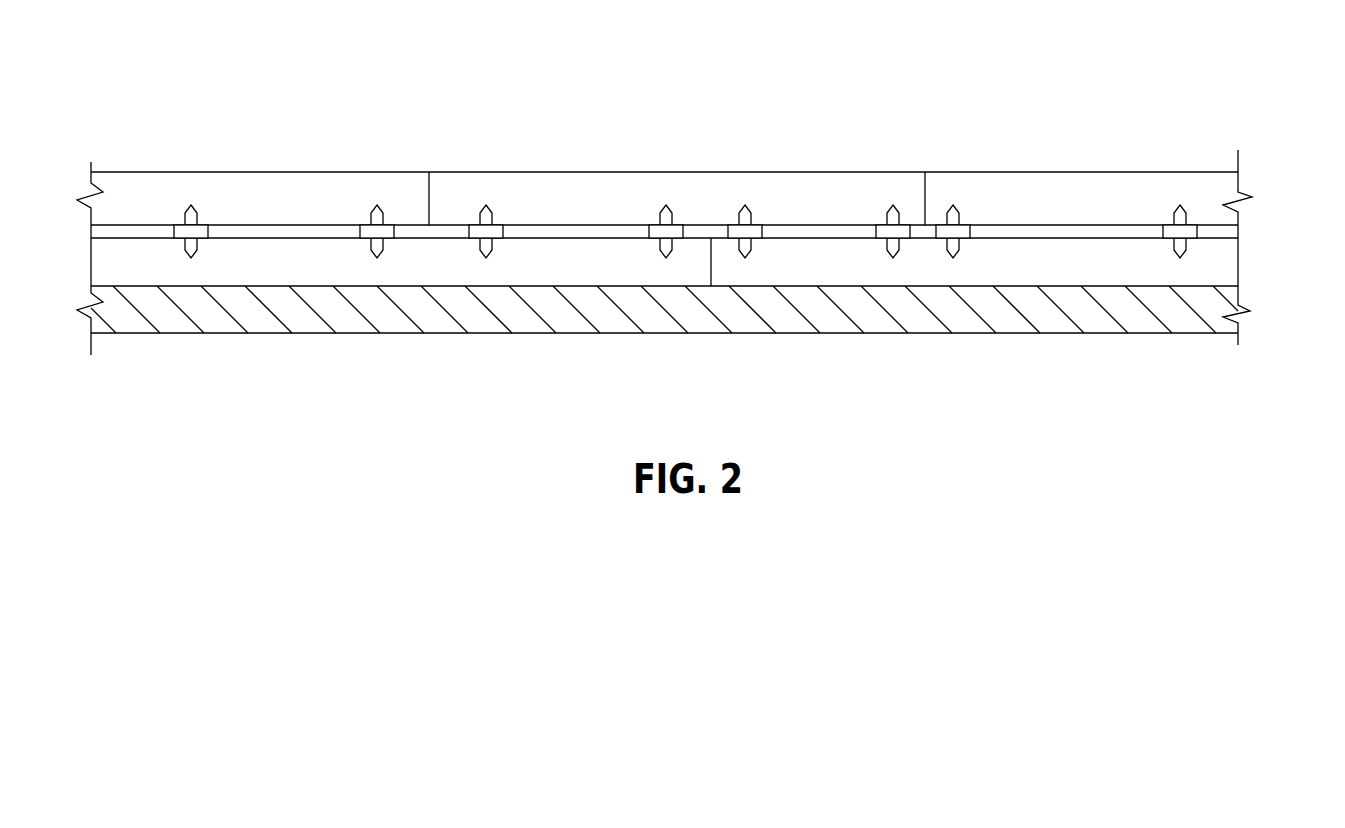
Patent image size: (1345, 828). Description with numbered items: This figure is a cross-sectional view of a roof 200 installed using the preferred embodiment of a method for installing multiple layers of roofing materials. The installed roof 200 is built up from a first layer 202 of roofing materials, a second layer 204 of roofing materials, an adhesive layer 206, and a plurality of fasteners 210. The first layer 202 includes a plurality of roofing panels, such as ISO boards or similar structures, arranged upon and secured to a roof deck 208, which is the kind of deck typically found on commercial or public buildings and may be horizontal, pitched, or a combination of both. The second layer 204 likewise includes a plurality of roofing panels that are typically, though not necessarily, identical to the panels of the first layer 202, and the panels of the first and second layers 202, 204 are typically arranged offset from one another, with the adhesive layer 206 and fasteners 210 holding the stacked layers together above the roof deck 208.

The roof 200 is at (710, 185).
The first layer 202 is at (710, 282).
The second layer 204 is at (1225, 185).
The adhesive layer 206 is at (1215, 224).
The roof deck 208 is at (1220, 326).
The fasteners 210 is at (188, 205).